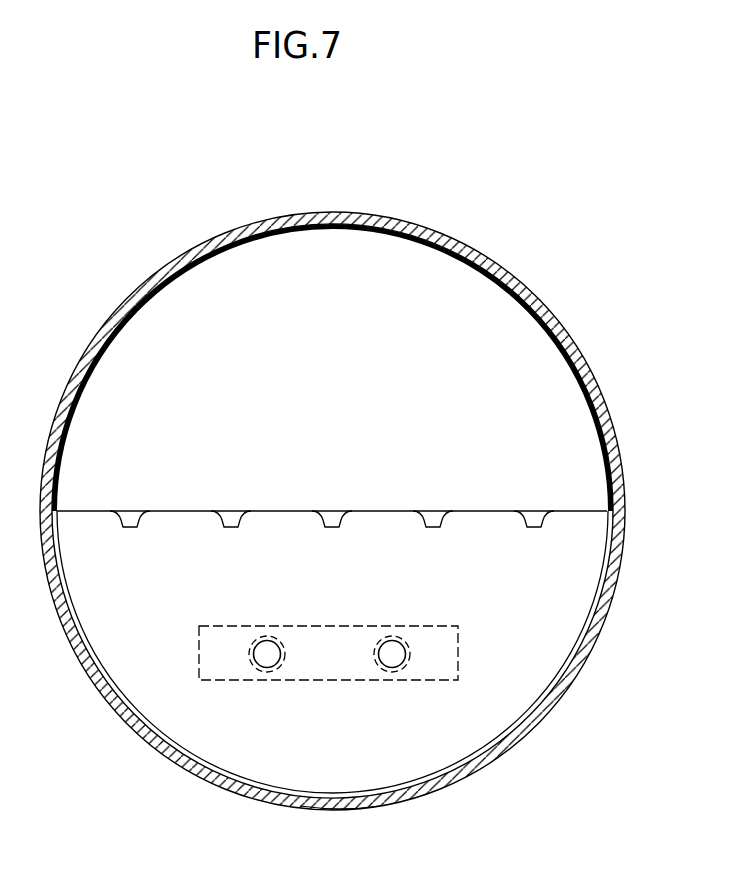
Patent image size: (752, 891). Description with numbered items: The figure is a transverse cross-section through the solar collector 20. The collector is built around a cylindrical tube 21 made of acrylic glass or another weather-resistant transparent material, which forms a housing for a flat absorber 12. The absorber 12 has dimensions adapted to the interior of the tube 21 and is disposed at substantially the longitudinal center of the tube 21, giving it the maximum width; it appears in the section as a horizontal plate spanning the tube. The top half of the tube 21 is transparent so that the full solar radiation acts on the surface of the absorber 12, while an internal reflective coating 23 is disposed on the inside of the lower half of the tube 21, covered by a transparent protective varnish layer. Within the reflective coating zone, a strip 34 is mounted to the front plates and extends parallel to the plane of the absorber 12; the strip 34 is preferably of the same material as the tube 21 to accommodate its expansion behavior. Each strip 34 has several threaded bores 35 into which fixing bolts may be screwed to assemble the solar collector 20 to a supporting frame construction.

The solar collector 20 is at (520, 264).
The cylindrical tube 21 is at (187, 260).
The internal reflective coating 23 is at (342, 788).
The absorber 12 is at (173, 510).
The strip 34 is at (323, 642).
The threaded bores 35 is at (267, 645).